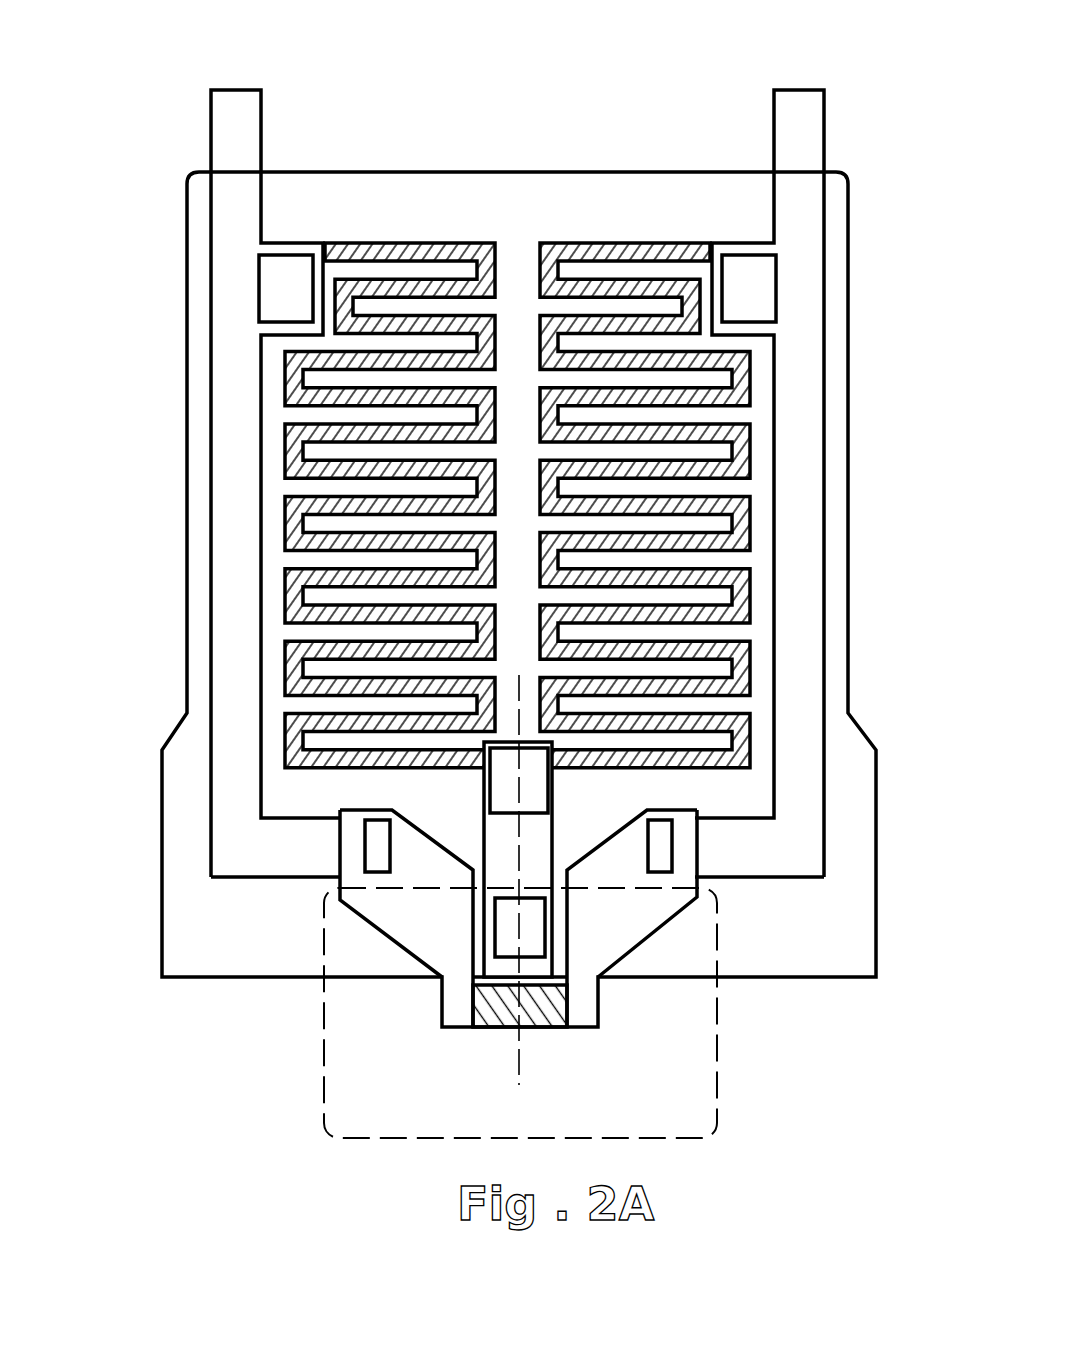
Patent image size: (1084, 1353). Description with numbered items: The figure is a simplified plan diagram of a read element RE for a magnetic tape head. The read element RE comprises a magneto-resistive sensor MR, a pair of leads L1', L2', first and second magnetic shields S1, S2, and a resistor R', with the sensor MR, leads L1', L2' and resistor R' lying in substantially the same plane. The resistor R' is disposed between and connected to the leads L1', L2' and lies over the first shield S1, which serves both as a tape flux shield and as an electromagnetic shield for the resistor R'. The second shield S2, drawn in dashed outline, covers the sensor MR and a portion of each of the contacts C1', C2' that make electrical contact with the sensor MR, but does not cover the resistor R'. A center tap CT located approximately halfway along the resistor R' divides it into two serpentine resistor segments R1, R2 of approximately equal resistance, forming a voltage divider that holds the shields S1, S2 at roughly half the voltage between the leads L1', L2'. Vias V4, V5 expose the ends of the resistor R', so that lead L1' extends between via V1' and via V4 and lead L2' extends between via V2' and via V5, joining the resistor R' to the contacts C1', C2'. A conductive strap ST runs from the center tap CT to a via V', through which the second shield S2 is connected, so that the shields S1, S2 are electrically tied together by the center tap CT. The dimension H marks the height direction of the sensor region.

The read element RE is at (343, 78).
The resistor R' is at (514, 473).
The serpentine resistor segment R1 is at (300, 408).
The serpentine resistor segment R2 is at (748, 387).
The lead L1' is at (205, 483).
The lead L2' is at (818, 483).
The via V4 is at (278, 302).
The via V5 is at (737, 288).
The center tap CT is at (505, 782).
The conductive strap ST is at (555, 833).
The via V1' is at (242, 817).
The via V2' is at (800, 821).
The first magnetic shield S1 is at (877, 885).
The second magnetic shield S2 is at (717, 1103).
The contact C1' is at (306, 923).
The contact C2' is at (726, 923).
The magneto-resistive sensor MR is at (497, 1010).
The via V' is at (638, 985).
The height H is at (548, 668).